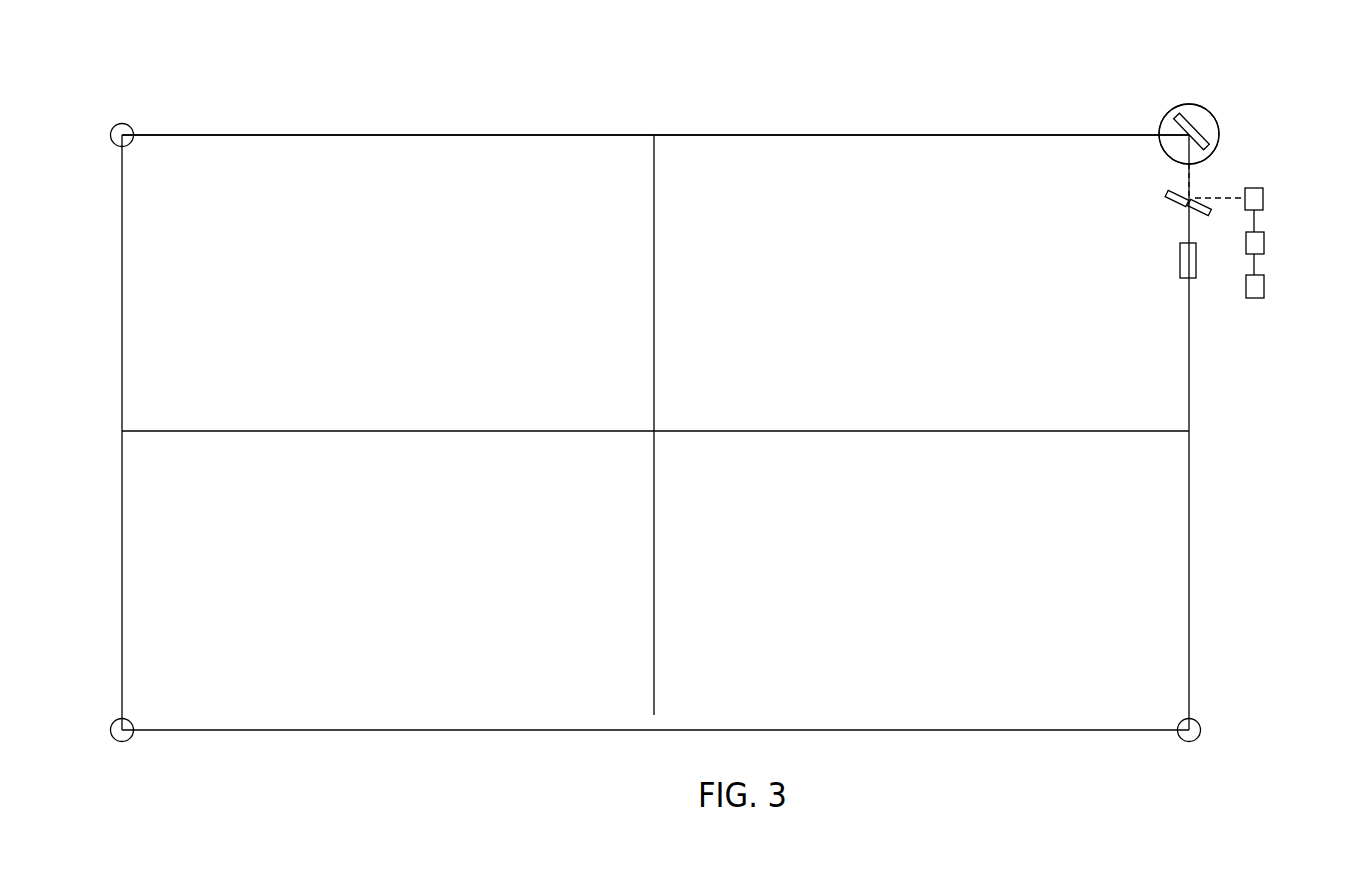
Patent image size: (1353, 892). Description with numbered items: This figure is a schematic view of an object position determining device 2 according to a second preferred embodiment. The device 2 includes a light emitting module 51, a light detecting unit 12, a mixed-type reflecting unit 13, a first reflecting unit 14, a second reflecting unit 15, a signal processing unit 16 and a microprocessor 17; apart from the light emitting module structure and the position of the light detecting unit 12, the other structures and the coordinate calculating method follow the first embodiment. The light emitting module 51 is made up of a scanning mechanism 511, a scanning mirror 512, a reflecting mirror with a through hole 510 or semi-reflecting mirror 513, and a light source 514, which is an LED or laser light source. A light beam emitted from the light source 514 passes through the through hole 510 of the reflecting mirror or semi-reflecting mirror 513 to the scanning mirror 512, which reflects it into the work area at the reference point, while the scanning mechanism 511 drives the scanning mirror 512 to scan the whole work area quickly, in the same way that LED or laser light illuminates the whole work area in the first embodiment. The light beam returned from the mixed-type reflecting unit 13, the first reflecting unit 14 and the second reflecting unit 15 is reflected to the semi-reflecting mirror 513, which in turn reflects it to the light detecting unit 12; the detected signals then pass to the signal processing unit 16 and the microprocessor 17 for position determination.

The object position determining device 2 is at (784, 88).
The light detecting unit 12 is at (1256, 197).
The mixed-type reflecting unit 13 is at (654, 247).
The first reflecting unit 14 is at (905, 135).
The second reflecting unit 15 is at (1189, 385).
The signal processing unit 16 is at (1256, 239).
The microprocessor 17 is at (1256, 285).
The light emitting module 51 is at (1196, 216).
The through hole 510 is at (1168, 193).
The scanning mechanism 511 is at (1200, 124).
The scanning mirror 512 is at (1193, 107).
The semi-reflecting mirror 513 is at (1200, 218).
The light source 514 is at (1196, 278).